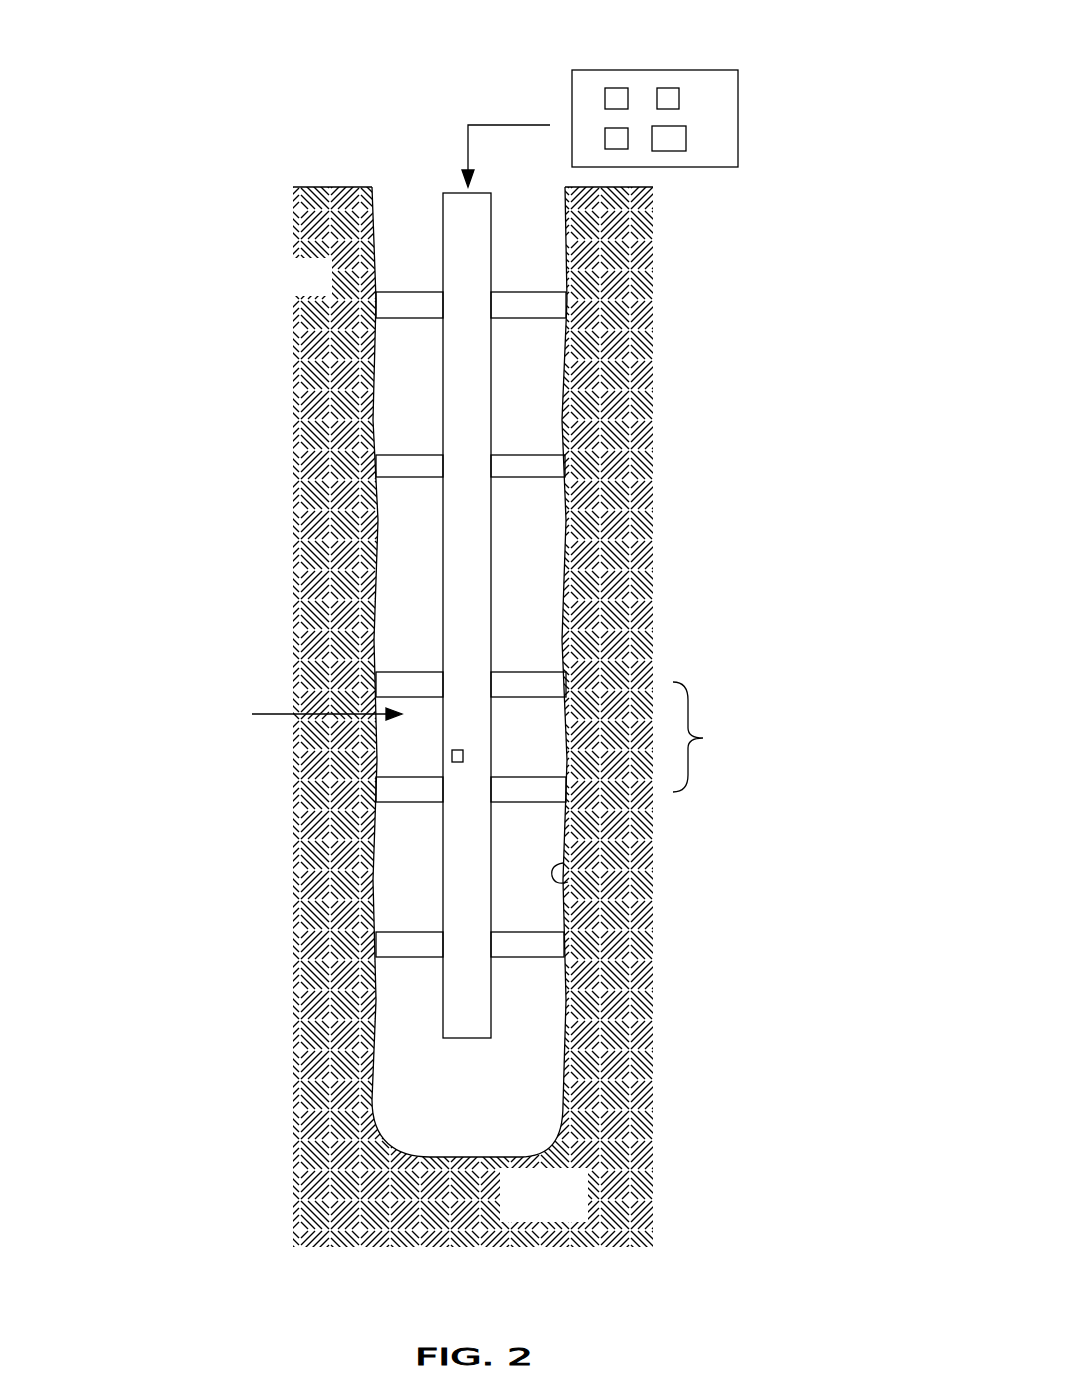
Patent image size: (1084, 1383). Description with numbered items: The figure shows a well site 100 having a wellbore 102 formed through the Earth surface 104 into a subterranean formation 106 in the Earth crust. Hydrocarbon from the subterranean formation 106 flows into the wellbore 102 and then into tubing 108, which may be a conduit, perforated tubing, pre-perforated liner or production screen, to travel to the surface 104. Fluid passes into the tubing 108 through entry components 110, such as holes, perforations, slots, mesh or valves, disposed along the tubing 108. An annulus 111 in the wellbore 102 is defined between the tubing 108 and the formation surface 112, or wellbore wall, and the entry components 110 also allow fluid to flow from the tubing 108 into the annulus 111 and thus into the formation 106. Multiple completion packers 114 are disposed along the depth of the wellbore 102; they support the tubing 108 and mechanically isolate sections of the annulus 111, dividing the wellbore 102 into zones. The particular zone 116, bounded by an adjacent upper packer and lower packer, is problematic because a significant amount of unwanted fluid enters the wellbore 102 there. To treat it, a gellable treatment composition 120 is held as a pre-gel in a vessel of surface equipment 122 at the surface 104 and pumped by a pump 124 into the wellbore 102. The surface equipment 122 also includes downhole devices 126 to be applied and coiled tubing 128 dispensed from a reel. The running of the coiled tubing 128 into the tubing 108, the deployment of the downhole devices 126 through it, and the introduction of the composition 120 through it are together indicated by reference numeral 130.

The well site 100 is at (498, 656).
The wellbore 102 is at (568, 386).
The Earth surface 104 is at (335, 187).
The subterranean formation 106 is at (322, 289).
The tubing 108 is at (443, 390).
The entry components 110 is at (456, 763).
The annulus 111 is at (400, 555).
The formation surface 112 is at (563, 866).
The completion packers 114 is at (540, 466).
The zone 116 is at (272, 713).
The gellable treatment composition 120 is at (668, 98).
The surface equipment 122 is at (661, 83).
The pump 124 is at (667, 137).
The downhole devices 126 is at (617, 98).
The coiled tubing 128 is at (605, 139).
The use of coiled tubing, deployment of downhole devices, and introduction of treatm 130 is at (492, 120).